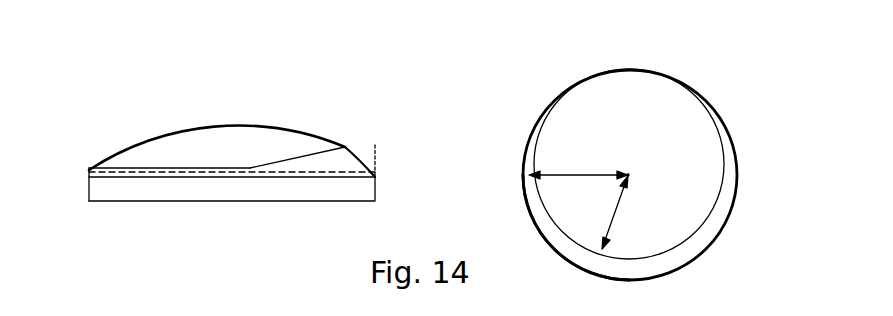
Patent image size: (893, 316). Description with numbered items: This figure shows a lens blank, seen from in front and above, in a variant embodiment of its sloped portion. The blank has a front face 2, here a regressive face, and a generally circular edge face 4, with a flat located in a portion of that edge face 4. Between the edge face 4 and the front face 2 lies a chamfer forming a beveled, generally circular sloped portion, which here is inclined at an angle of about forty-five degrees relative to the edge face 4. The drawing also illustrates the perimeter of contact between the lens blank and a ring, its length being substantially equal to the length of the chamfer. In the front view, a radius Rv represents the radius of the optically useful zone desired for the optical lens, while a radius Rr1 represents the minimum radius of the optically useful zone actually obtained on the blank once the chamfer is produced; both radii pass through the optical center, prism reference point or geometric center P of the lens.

The front face 2 is at (226, 127).
The edge face 4 is at (376, 190).
The geometric center P is at (629, 172).
The radius of desired optically useful zone Rv is at (578, 164).
The minimum radius of obtained optically useful zone Rr1 is at (626, 212).